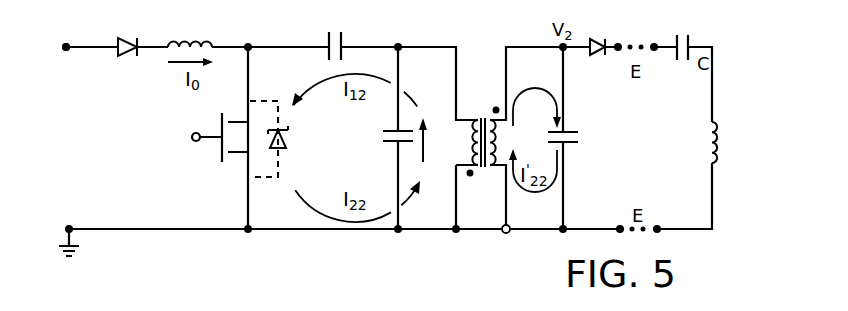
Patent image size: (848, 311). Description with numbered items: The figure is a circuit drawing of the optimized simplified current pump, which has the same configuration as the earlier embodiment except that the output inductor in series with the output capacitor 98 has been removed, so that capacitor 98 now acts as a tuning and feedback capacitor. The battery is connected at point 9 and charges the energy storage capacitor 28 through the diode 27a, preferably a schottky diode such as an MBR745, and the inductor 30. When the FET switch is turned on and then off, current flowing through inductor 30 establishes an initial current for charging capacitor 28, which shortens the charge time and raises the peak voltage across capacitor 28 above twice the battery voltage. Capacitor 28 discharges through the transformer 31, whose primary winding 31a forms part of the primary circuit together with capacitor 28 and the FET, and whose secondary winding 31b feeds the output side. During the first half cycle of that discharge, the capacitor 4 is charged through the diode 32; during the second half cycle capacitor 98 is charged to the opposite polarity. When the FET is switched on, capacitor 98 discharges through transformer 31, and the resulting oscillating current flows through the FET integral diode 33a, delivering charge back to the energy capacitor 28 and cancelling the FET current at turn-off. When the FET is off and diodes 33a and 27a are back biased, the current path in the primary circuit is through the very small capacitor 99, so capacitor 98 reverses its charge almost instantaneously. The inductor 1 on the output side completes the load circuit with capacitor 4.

The point 9 is at (56, 47).
The diode 27a is at (125, 33).
The inductor 30 is at (190, 31).
The energy capacitor 28 is at (333, 34).
The FET integral diode 33a is at (288, 139).
The capacitor 99 is at (382, 135).
The transformer 31 is at (485, 185).
The transformer winding 31a is at (458, 142).
The transformer winding 31b is at (511, 142).
The output capacitor 98 is at (577, 140).
The diode 32 is at (601, 34).
The capacitor 4 is at (684, 34).
The inductor 1 is at (724, 142).